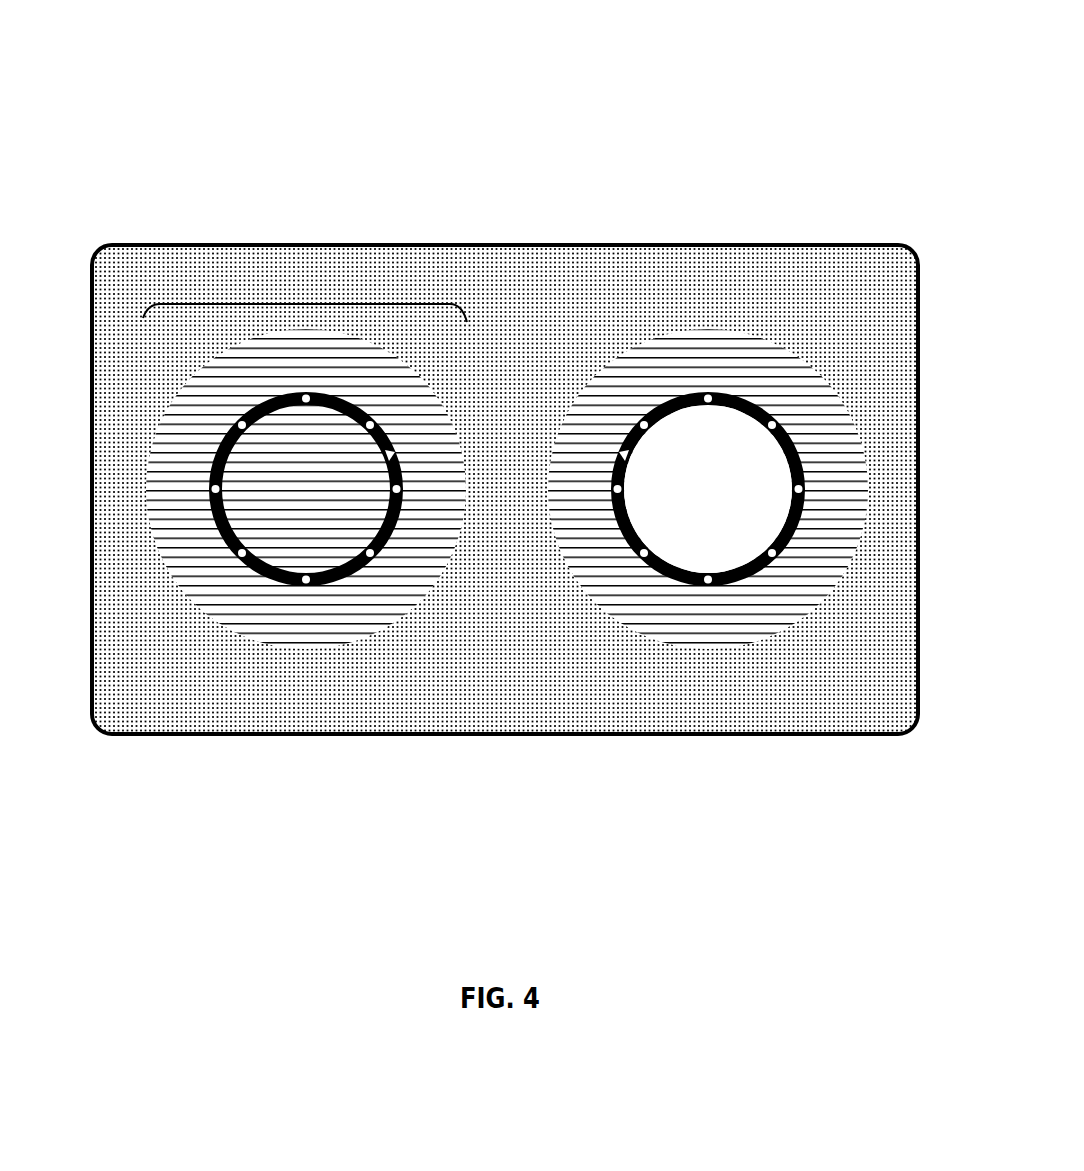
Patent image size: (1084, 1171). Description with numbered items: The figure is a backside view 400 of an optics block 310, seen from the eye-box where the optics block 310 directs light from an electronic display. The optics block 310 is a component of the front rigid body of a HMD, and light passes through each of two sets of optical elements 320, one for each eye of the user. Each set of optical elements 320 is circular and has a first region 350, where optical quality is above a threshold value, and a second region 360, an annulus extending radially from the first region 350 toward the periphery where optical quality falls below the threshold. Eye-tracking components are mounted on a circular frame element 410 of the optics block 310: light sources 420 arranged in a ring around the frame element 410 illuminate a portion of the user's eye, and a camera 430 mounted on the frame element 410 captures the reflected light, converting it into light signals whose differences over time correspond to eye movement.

The backside view 400 is at (487, 13).
The optics block 310 is at (312, 735).
The set of optical elements 320 is at (305, 303).
The first region 350 is at (703, 490).
The second region 360 is at (762, 592).
The frame element 410 is at (678, 583).
The light sources 420 is at (708, 397).
The camera 430 is at (620, 455).